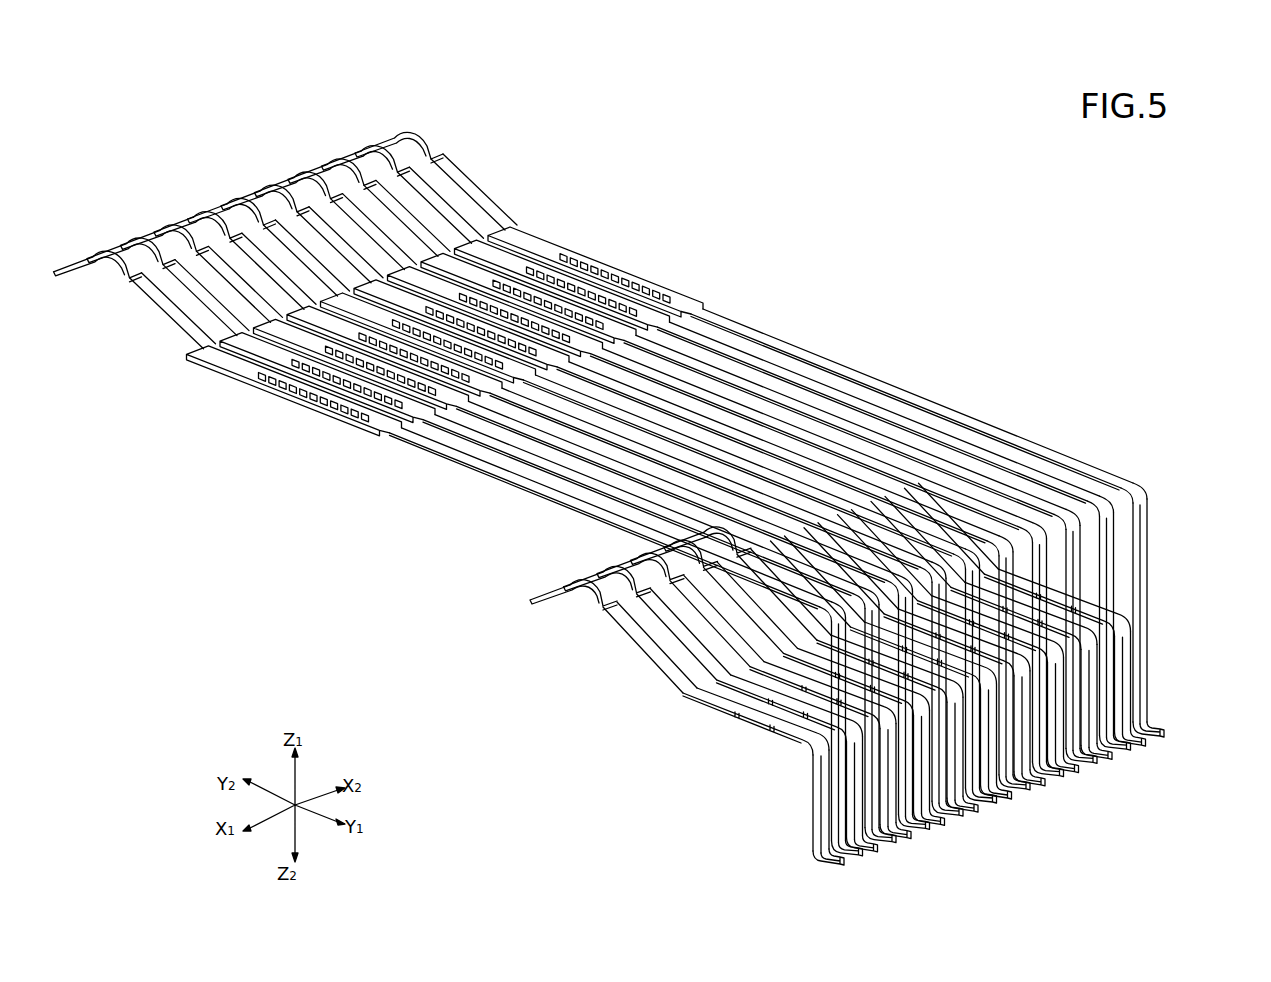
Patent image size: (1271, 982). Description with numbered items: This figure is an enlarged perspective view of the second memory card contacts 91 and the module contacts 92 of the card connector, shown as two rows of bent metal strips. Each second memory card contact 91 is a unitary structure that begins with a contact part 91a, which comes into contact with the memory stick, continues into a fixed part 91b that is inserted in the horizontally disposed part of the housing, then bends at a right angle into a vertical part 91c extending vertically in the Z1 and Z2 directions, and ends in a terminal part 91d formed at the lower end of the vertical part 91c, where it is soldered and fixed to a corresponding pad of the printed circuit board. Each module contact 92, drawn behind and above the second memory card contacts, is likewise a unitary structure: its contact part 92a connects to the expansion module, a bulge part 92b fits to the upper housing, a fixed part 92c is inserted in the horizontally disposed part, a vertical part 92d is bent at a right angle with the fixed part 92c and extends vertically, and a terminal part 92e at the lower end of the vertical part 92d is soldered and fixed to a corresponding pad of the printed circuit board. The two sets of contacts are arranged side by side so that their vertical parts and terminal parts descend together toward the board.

The second memory card contact 91 is at (784, 686).
The contact part 91a is at (612, 580).
The fixed part 91b is at (803, 712).
The vertical part 91c is at (820, 800).
The terminal part 91d is at (893, 825).
The module contact 92 is at (649, 452).
The contact part 92a is at (352, 152).
The bulge part 92b is at (548, 298).
The fixed part 92c is at (1023, 495).
The vertical part 92d is at (1082, 593).
The terminal part 92e is at (1115, 762).